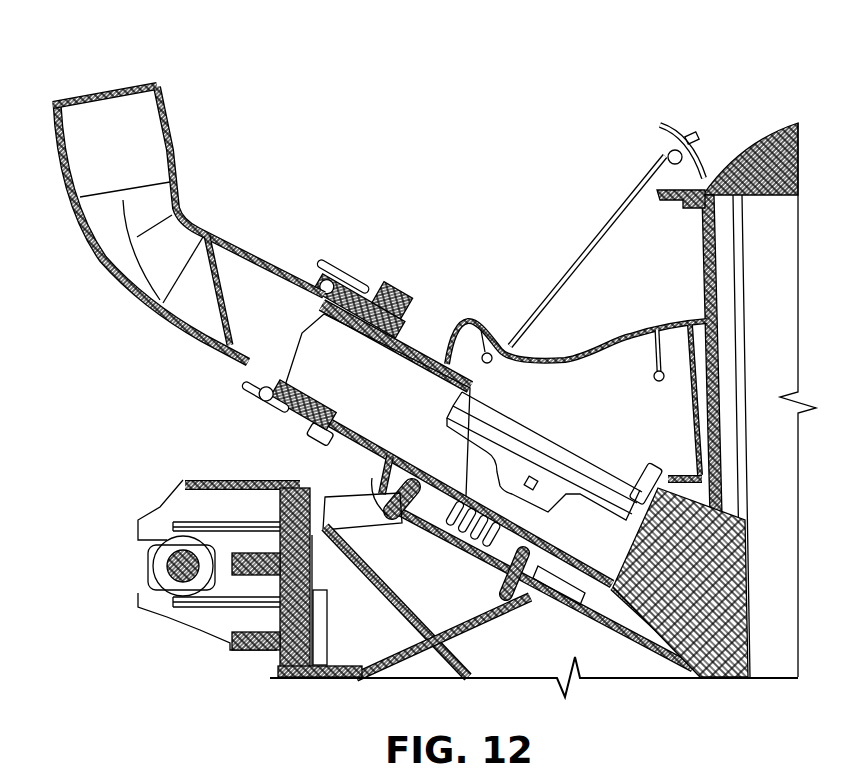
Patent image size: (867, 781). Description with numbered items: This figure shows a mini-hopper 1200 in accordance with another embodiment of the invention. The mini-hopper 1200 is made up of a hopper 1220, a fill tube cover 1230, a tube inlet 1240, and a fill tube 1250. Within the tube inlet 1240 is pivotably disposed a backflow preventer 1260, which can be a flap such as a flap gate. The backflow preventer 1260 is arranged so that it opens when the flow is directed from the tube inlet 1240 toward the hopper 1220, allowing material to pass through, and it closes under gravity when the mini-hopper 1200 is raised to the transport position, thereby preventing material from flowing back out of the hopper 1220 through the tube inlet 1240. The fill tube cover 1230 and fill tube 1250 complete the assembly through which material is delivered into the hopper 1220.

The mini-hopper 1200 is at (188, 34).
The hopper 1220 is at (785, 128).
The fill tube cover 1230 is at (632, 325).
The tube inlet 1240 is at (100, 98).
The fill tube 1250 is at (581, 444).
The backflow preventer 1260 is at (213, 237).